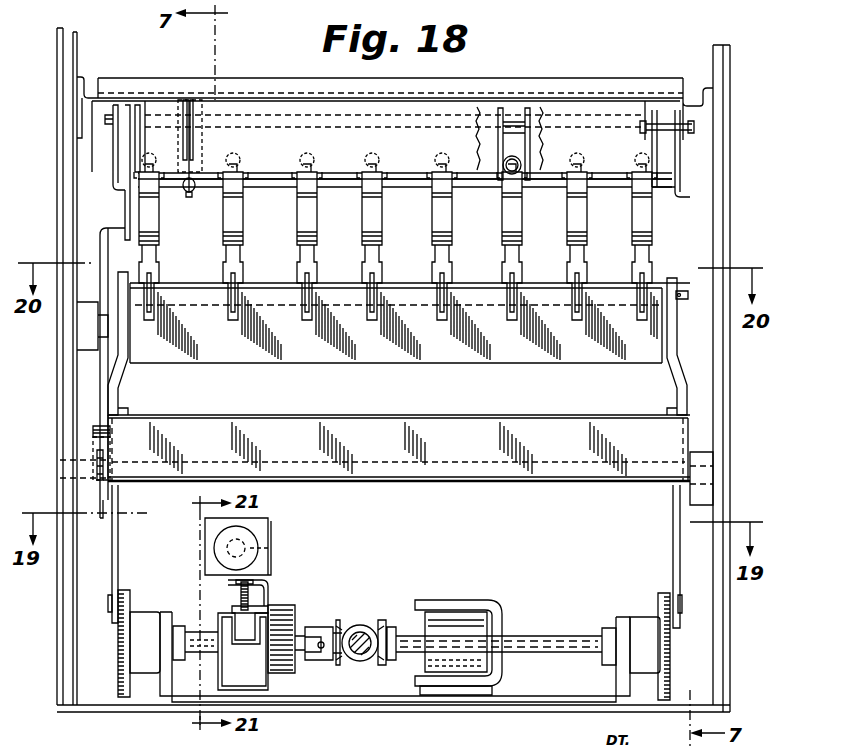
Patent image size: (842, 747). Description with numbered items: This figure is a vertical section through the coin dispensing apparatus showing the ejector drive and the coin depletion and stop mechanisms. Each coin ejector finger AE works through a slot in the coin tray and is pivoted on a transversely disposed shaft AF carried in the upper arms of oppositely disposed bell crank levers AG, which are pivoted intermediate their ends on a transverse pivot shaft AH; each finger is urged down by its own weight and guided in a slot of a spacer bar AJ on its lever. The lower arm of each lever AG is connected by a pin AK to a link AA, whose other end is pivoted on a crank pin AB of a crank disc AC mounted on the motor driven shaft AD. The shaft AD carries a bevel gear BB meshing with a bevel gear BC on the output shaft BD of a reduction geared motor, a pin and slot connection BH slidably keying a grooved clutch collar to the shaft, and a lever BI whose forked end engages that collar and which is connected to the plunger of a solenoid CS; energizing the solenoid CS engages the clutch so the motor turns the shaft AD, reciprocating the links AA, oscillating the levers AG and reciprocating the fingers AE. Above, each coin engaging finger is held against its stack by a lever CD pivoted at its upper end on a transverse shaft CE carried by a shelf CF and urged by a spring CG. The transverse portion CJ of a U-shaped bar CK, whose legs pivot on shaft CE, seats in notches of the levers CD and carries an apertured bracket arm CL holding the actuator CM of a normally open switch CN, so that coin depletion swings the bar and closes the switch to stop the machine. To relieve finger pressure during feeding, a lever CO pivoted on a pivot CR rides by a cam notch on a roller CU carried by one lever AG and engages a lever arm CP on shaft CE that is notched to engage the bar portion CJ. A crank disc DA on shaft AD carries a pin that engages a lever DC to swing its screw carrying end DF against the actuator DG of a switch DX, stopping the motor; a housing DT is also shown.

The link AA is at (118, 546).
The crank pin AB is at (108, 602).
The crank disc AC is at (120, 680).
The motor driven shaft AD is at (592, 640).
The coin ejector finger AE is at (152, 280).
The transversely disposed shaft AF is at (683, 292).
The bell crank lever AG is at (122, 378).
The pivot shaft AH is at (336, 482).
The spacer bar AJ is at (608, 345).
The pin AK is at (132, 436).
The bevel gear BB is at (385, 622).
The bevel gear BC is at (362, 625).
The output shaft BD is at (365, 662).
The pin and slot connection BH is at (322, 652).
The lever BI is at (338, 622).
The lever CD is at (502, 224).
The transversely extending shaft CE is at (664, 124).
The shelf CF is at (368, 153).
The spring CG is at (521, 162).
The transverse portion of U-shaped bar CJ is at (424, 190).
The U-shaped bar CK is at (675, 180).
The apertured bracket arm CL is at (187, 197).
The actuator CM is at (191, 167).
The normally open switch CN is at (194, 137).
The lever CO is at (101, 240).
The lever arm CP is at (125, 200).
The pivot CR is at (98, 328).
The solenoid CS is at (455, 622).
The roller CU is at (93, 432).
The crank disc DA is at (313, 625).
The lever DC is at (271, 592).
The screw carrying end DF is at (240, 598).
The actuator DG is at (232, 609).
The motor housing DT is at (271, 550).
The switch DX is at (250, 661).